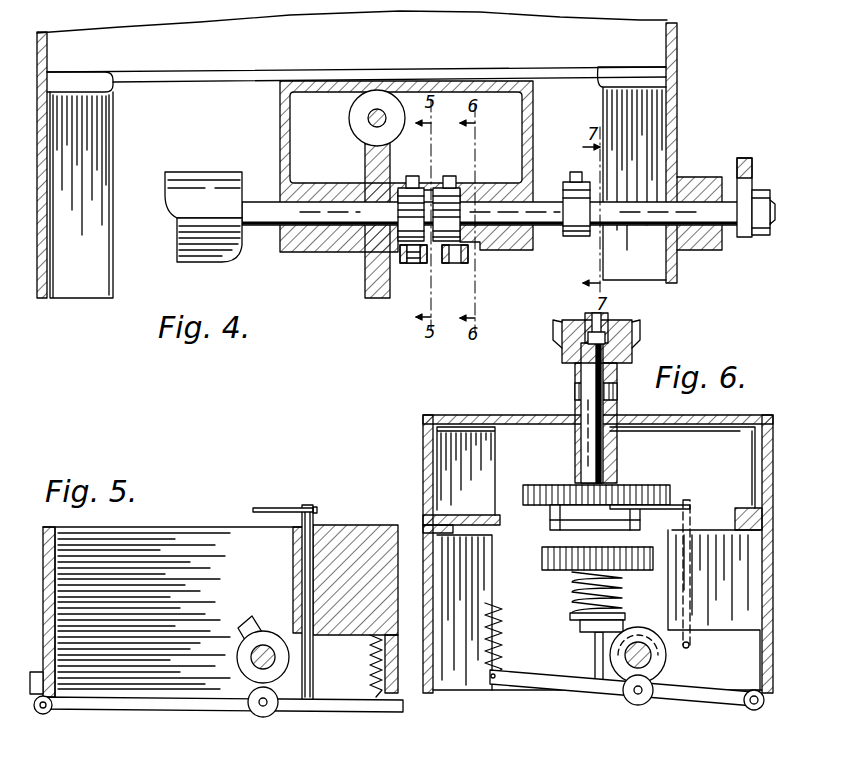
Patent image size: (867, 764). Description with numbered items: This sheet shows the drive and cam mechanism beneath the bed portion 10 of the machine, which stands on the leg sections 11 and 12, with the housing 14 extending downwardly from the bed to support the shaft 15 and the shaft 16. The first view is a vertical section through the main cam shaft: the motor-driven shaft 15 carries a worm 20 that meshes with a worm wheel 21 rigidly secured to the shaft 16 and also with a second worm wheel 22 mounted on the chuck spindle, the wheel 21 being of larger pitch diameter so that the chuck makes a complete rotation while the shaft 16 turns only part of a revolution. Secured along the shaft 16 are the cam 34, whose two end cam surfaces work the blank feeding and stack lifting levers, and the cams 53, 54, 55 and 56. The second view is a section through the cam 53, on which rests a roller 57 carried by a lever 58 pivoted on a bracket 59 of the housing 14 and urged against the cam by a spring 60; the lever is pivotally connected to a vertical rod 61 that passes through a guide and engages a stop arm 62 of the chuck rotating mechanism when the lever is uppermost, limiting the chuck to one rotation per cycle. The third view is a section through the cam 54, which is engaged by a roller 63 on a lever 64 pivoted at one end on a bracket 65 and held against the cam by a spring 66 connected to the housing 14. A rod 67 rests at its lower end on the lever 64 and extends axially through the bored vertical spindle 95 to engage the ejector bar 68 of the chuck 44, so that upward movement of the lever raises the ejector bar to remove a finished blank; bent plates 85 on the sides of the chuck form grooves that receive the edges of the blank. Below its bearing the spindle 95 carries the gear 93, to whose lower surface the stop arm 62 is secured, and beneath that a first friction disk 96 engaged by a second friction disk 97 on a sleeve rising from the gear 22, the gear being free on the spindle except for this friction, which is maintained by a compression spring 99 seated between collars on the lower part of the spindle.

In FIG. 4, the bed portion 10 is at (677, 50).
In FIG. 6, the bed portion 10 is at (770, 415).
In FIG. 4, the leg section 11 is at (40, 238).
In FIG. 4, the leg section 12 is at (677, 270).
In FIG. 4, the housing 14 is at (603, 125).
In FIG. 5, the housing 14 is at (45, 638).
In FIG. 6, the housing 14 is at (434, 648).
In FIG. 4, the shaft 15 is at (372, 112).
In FIG. 4, the shaft 16 is at (268, 230).
In FIG. 5, the shaft 16 is at (266, 648).
In FIG. 6, the shaft 16 is at (640, 642).
In FIG. 4, the worm 20 is at (383, 96).
In FIG. 4, the worm wheel 21 is at (365, 265).
In FIG. 6, the worm wheel 22 is at (542, 567).
In FIG. 4, the cam 34 is at (200, 172).
In FIG. 6, the chuck 44 is at (632, 332).
In FIG. 4, the cam 53 is at (411, 188).
In FIG. 5, the cam 53 is at (245, 662).
In FIG. 4, the cam 54 is at (447, 188).
In FIG. 6, the cam 54 is at (666, 660).
In FIG. 4, the cam 55 is at (576, 182).
In FIG. 4, the cam 56 is at (755, 237).
In FIG. 4, the roller 57 is at (413, 264).
In FIG. 5, the roller 57 is at (272, 712).
In FIG. 4, the lever 58 is at (405, 264).
In FIG. 5, the lever 58 is at (170, 712).
In FIG. 5, the bracket 59 is at (36, 705).
In FIG. 5, the spring 60 is at (372, 663).
In FIG. 5, the rod 61 is at (302, 554).
In FIG. 6, the rod 61 is at (690, 645).
In FIG. 5, the stop arm 62 is at (298, 508).
In FIG. 6, the stop arm 62 is at (685, 505).
In FIG. 4, the roller 63 is at (453, 264).
In FIG. 6, the roller 63 is at (636, 705).
In FIG. 4, the lever 64 is at (468, 258).
In FIG. 6, the lever 64 is at (548, 688).
In FIG. 6, the bracket 65 is at (764, 702).
In FIG. 6, the spring 66 is at (500, 636).
In FIG. 6, the rod 67 is at (575, 377).
In FIG. 6, the ejector bar 68 is at (608, 322).
In FIG. 6, the bent plate 85 is at (553, 338).
In FIG. 6, the gear 93 is at (545, 485).
In FIG. 6, the spindle 95 is at (583, 408).
In FIG. 6, the first friction disk 96 is at (550, 514).
In FIG. 6, the second friction disk 97 is at (550, 526).
In FIG. 6, the compression spring 99 is at (572, 597).